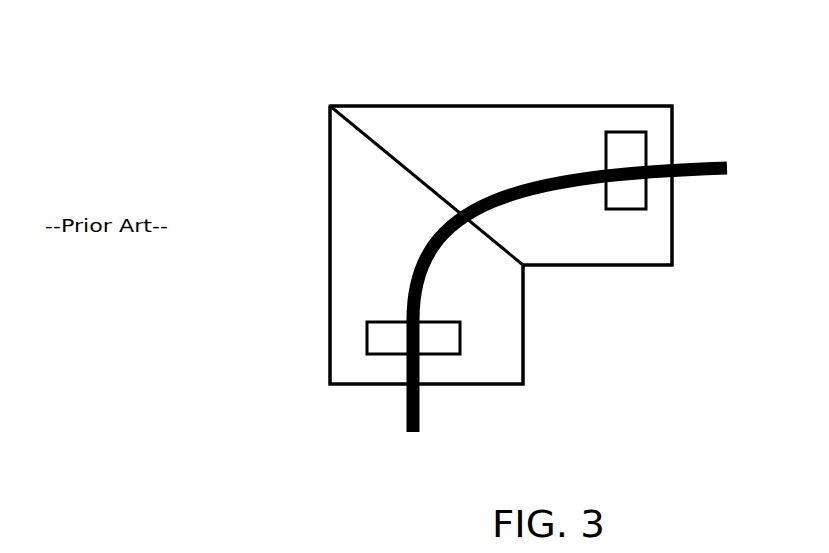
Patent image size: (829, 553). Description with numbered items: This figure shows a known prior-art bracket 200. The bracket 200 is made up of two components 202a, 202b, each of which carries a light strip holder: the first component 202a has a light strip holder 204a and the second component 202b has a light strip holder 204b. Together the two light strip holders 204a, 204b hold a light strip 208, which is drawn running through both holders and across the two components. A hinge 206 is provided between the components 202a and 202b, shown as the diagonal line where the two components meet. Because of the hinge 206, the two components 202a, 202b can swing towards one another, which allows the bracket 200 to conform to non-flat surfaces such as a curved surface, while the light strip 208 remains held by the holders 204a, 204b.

The bracket 200 is at (322, 70).
The component 202a is at (524, 350).
The component 202b is at (543, 106).
The light strip holder 204a is at (367, 333).
The light strip holder 204b is at (624, 132).
The hinge 206 is at (422, 180).
The light strip 208 is at (420, 413).